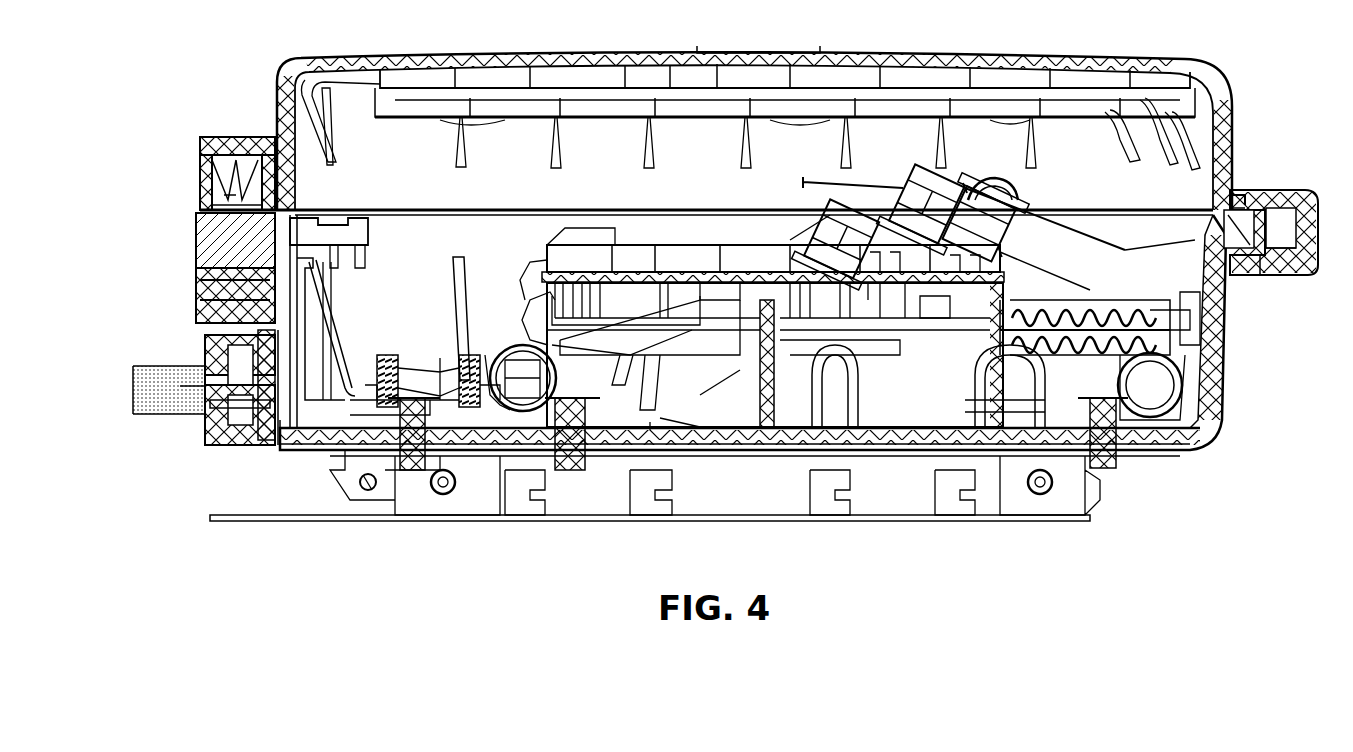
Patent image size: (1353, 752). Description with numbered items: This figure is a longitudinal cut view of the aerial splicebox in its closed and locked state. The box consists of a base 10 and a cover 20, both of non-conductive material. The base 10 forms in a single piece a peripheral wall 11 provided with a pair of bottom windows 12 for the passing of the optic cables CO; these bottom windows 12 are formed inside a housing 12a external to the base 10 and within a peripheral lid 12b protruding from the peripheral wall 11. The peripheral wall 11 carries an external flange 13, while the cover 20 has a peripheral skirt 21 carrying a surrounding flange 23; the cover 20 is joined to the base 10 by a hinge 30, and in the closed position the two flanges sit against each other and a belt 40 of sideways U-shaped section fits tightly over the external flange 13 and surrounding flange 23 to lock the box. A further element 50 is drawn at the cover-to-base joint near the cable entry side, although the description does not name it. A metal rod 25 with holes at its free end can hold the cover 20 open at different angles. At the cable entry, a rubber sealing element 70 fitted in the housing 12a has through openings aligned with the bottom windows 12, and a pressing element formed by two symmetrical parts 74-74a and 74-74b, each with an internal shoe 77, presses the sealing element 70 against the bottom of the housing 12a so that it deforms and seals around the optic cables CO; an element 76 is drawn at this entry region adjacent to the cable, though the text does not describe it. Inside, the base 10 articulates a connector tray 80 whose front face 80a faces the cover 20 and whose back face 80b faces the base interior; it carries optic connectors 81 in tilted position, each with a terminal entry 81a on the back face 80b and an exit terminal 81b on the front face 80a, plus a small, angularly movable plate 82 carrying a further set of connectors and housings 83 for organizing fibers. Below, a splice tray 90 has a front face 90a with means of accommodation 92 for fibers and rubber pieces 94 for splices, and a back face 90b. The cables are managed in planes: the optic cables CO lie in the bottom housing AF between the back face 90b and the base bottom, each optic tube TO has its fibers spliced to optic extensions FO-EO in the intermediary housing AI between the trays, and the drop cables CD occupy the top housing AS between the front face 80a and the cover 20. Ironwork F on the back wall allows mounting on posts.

The base 10 is at (1212, 452).
The peripheral wall 11 is at (300, 342).
The bottom windows 12 is at (305, 410).
The housing 12a is at (196, 262).
The peripheral lid 12b is at (300, 235).
The external flange 13 is at (1245, 262).
The cover 20 is at (1228, 75).
The peripheral skirt 21 is at (200, 183).
The surrounding flange 23 is at (1237, 195).
The metal rod 25 is at (630, 420).
The hinge 30 is at (1302, 275).
The belt 40 is at (1262, 180).
The sealing block 50 is at (237, 136).
The sealing element 70 is at (268, 400).
The symmetrical part of pressing element 74-74a is at (205, 350).
The symmetrical part of pressing element 74-74b is at (145, 420).
The cable 76 is at (148, 416).
The shoe 77 is at (240, 445).
The connector tray 80 is at (1190, 268).
The front face 80a is at (656, 268).
The back face 80b is at (585, 360).
The optic connectors 81 is at (905, 182).
The terminal entry 81a is at (1060, 225).
The exit terminal 81b is at (835, 172).
The small plate 82 is at (1025, 188).
The housings 83 is at (1150, 268).
The splice tray 90 is at (1185, 360).
The front face 90a is at (686, 300).
The back face 90b is at (735, 330).
The means of accommodation 92 is at (945, 322).
The rubber pieces 94 is at (1135, 240).
The top housing AS is at (592, 146).
The intermediary housing AI is at (630, 296).
The bottom housing AF is at (685, 428).
The drop cables CD is at (800, 195).
The optic cables CO is at (200, 425).
The ironwork F is at (320, 522).
The optic fibers and optic extensions FO-EO is at (1100, 290).
The optic tube TO is at (857, 345).